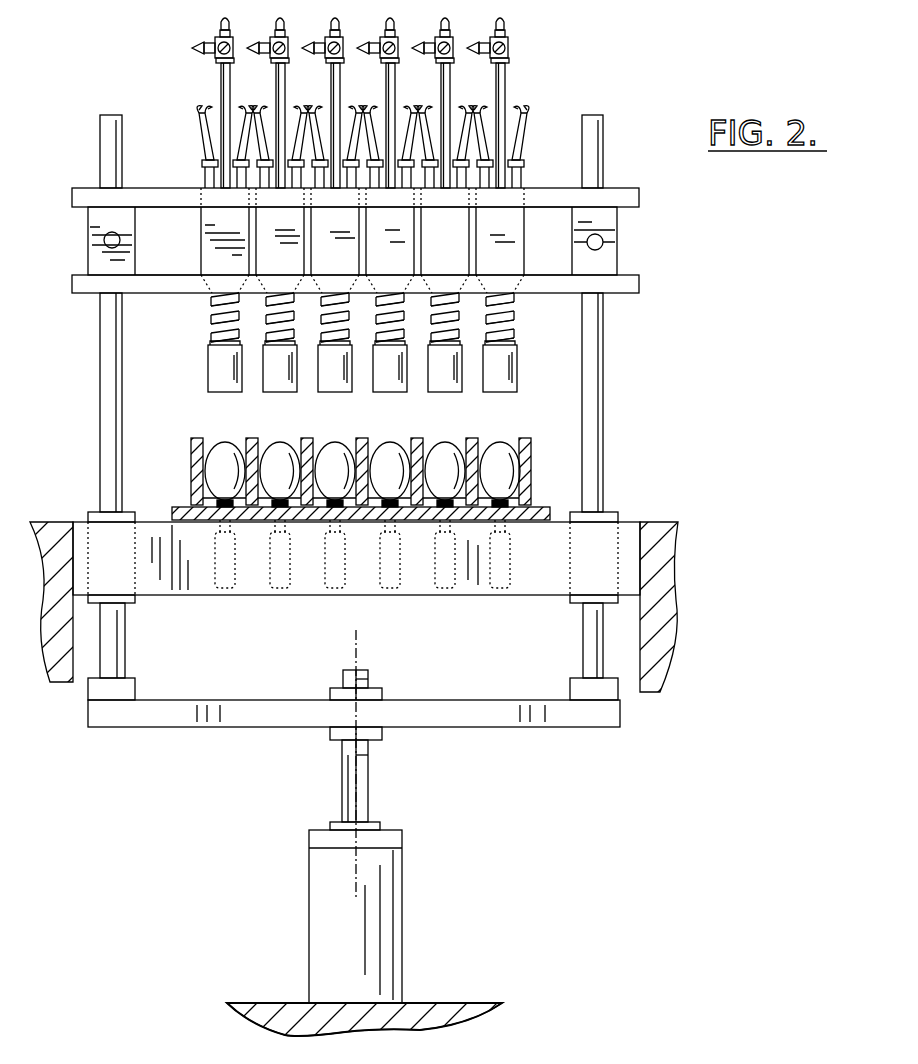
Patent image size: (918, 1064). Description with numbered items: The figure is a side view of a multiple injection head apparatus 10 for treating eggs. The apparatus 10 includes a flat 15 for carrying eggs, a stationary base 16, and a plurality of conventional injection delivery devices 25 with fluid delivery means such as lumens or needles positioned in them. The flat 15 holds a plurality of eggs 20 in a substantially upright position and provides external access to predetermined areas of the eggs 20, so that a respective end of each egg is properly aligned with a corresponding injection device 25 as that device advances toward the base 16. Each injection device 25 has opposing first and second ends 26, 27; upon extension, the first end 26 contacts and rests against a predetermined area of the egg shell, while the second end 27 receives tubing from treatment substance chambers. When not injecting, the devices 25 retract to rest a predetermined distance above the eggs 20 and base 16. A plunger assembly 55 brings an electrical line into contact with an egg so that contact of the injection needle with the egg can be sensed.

The apparatus 10 is at (775, 433).
The second end 27 is at (512, 52).
The injection delivery device 25 is at (270, 245).
The first end 26 is at (517, 383).
The flat 15 is at (530, 452).
The egg 20 is at (280, 446).
The stationary base 16 is at (617, 548).
The plunger assembly 55 is at (330, 568).